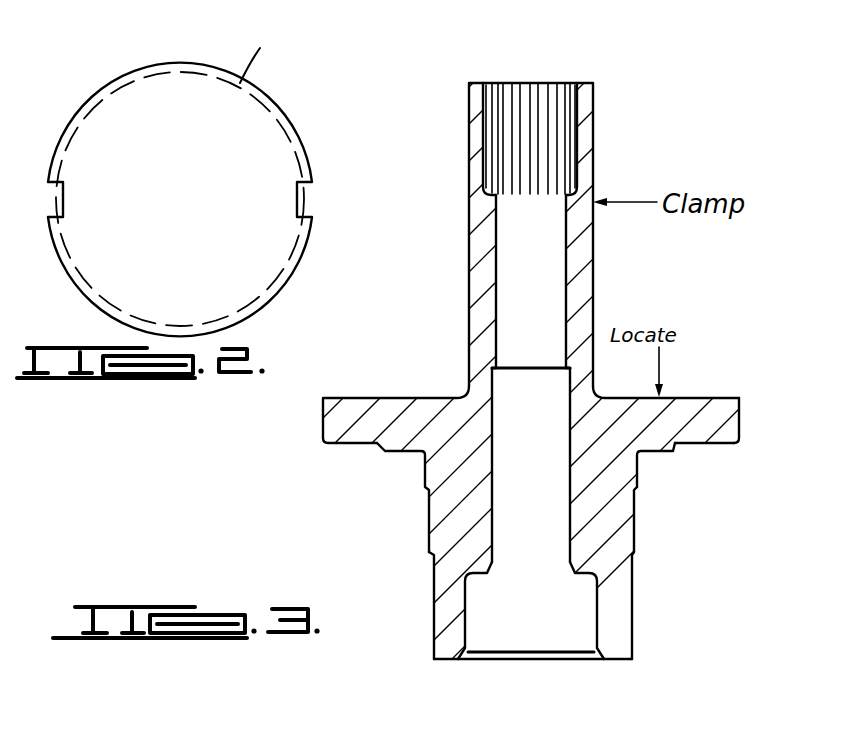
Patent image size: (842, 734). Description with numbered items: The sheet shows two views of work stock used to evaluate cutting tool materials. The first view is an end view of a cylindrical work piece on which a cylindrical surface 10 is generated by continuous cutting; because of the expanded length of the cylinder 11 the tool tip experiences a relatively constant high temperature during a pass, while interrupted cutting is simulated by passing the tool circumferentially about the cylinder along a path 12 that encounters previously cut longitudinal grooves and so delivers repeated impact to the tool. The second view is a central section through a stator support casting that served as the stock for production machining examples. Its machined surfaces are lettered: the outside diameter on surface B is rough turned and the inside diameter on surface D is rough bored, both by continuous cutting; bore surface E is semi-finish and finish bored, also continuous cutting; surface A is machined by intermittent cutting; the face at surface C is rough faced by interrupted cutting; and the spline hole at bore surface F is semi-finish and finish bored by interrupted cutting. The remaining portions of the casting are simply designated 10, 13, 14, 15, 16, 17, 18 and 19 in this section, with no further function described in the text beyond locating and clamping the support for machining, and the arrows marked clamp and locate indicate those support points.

The cylindrical surface 10 is at (594, 259).
The cylinder 11 is at (566, 283).
The path 12 is at (565, 94).
The flange 13 is at (708, 396).
The flange underside surface 14 is at (730, 441).
The stepped shoulder 15 is at (664, 456).
The flange peripheral edge 16 is at (739, 420).
The lower cylindrical wall 17 is at (633, 600).
The boss side wall 18 is at (635, 530).
The boss side wall (left) 19 is at (423, 474).
The surface A is at (432, 668).
The surface B is at (422, 592).
The surface C is at (347, 455).
The surface D is at (588, 608).
The bore surface E is at (505, 345).
The bore surface F is at (489, 110).